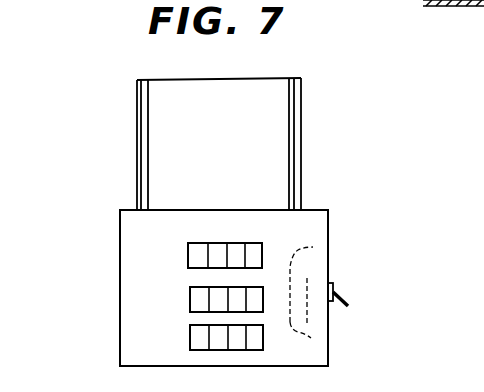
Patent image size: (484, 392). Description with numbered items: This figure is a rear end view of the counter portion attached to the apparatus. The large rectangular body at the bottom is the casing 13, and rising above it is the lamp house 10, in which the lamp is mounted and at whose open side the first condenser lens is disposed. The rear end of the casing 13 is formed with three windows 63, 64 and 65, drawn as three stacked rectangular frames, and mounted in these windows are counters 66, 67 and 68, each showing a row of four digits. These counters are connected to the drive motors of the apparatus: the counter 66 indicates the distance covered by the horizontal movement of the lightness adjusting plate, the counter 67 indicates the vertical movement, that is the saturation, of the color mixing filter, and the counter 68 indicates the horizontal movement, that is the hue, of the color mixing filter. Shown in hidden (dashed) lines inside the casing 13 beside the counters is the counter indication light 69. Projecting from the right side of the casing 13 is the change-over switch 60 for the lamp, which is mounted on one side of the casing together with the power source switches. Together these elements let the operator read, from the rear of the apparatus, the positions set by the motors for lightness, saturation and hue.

The lamp house 10 is at (281, 106).
The casing 13 is at (122, 232).
The change-over switch 60 is at (348, 306).
The window 63 is at (188, 249).
The window 64 is at (190, 297).
The window 65 is at (190, 337).
The counter 66 is at (252, 243).
The counter 67 is at (243, 287).
The counter 68 is at (241, 345).
The counter indication light 69 is at (307, 278).